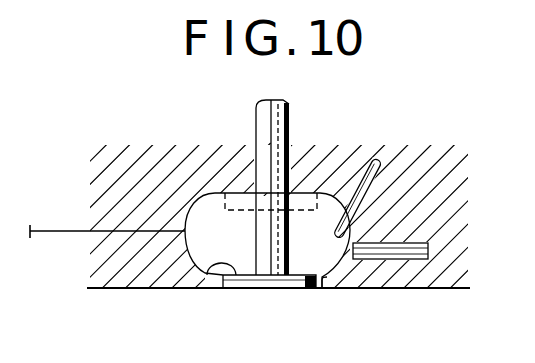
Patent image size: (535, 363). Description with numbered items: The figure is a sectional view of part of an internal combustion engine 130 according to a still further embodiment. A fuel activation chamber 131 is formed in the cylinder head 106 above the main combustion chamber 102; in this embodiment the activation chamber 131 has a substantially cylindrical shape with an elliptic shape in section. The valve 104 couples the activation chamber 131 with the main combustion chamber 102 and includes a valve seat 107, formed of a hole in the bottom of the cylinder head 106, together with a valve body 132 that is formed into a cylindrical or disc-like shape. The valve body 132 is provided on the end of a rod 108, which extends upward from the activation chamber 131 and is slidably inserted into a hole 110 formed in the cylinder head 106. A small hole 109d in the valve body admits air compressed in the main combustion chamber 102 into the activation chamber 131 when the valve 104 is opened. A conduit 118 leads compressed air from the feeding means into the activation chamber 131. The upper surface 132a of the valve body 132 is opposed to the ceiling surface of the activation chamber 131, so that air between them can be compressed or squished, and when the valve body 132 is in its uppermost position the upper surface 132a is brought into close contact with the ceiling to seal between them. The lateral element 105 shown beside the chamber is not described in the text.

The main combustion chamber 102 is at (145, 327).
The valve 104 is at (380, 160).
The lateral pin 105 is at (416, 243).
The cylinder head 106 is at (118, 178).
The valve seat 107 is at (258, 291).
The rod 108 is at (292, 122).
The small hole 109d is at (300, 292).
The hole 110 is at (262, 155).
The conduit 118 is at (60, 226).
The internal combustion engine 130 is at (148, 142).
The fuel activation chamber 131 is at (234, 245).
The valve body 132 is at (312, 190).
The upper surface 132a is at (226, 279).